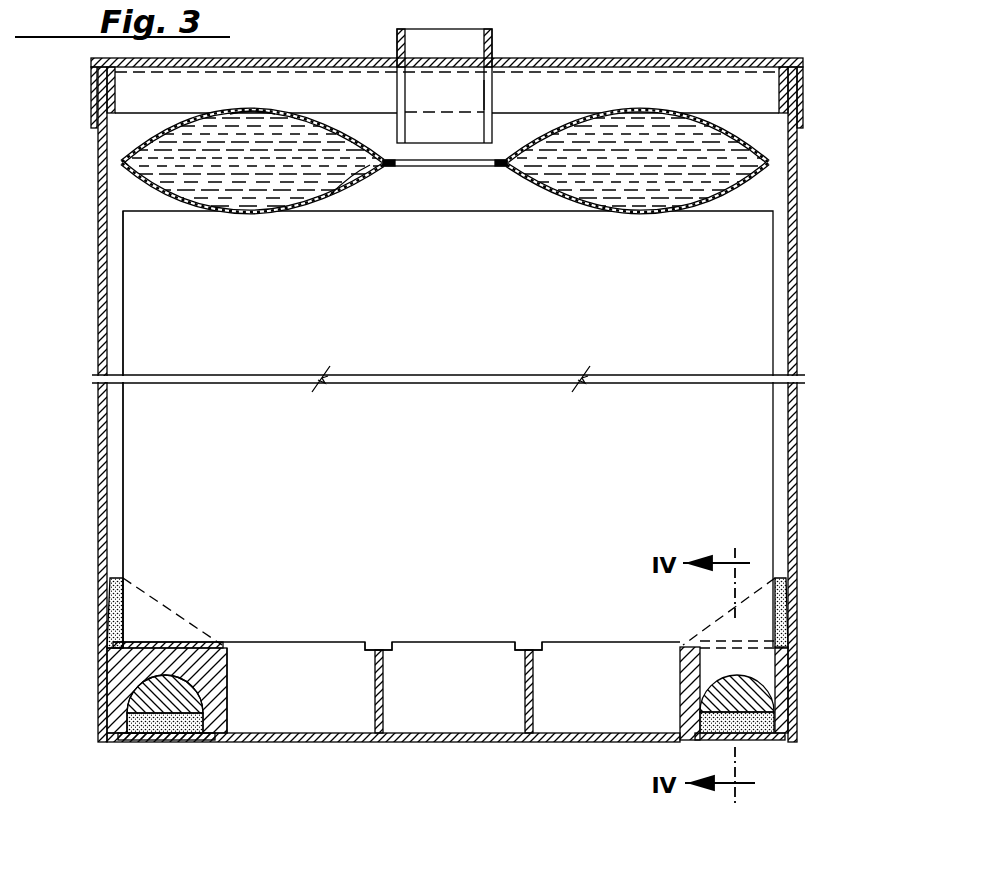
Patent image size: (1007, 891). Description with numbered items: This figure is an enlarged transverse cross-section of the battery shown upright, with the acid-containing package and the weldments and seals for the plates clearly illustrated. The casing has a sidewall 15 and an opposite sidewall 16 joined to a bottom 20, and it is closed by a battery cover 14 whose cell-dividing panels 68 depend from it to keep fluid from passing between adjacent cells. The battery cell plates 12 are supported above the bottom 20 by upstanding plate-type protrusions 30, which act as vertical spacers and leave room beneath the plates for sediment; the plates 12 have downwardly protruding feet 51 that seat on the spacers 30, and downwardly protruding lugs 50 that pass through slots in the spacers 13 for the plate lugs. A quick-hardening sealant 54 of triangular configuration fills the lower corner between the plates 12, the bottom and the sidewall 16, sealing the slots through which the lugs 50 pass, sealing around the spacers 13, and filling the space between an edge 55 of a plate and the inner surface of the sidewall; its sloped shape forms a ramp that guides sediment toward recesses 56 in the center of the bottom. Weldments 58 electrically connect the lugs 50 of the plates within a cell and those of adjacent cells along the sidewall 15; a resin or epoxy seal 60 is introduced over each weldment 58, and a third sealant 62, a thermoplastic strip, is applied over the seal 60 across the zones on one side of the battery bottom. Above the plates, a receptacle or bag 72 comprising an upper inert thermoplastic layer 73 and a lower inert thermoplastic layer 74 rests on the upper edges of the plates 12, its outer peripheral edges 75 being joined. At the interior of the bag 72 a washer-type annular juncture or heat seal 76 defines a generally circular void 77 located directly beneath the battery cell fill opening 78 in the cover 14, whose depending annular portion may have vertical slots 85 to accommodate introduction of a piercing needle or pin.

The battery cell plates 12 is at (492, 426).
The spacers 13 is at (205, 640).
The battery cover 14 is at (672, 60).
The sidewall 15 is at (793, 470).
The sidewall 16 is at (100, 408).
The bottom 20 is at (357, 742).
The protrusions 30 is at (525, 695).
The lugs 50 is at (758, 665).
The feet 51 is at (378, 642).
The sealant 54 is at (125, 580).
The edge 55 is at (125, 484).
The recesses 56 is at (317, 701).
The weldments 58 is at (160, 690).
The seal 60 is at (780, 720).
The third sealant 62 is at (763, 742).
The cell-dividing panels 68 is at (740, 93).
The receptacle 72 is at (755, 142).
The upper inert thermoplastic layer 73 is at (265, 113).
The lower inert thermoplastic layer 74 is at (338, 192).
The outer peripheral edges 75 is at (123, 163).
The annular juncture 76 is at (498, 160).
The circular void 77 is at (450, 168).
The battery cell fill opening 78 is at (492, 38).
The vertical slots 85 is at (487, 95).